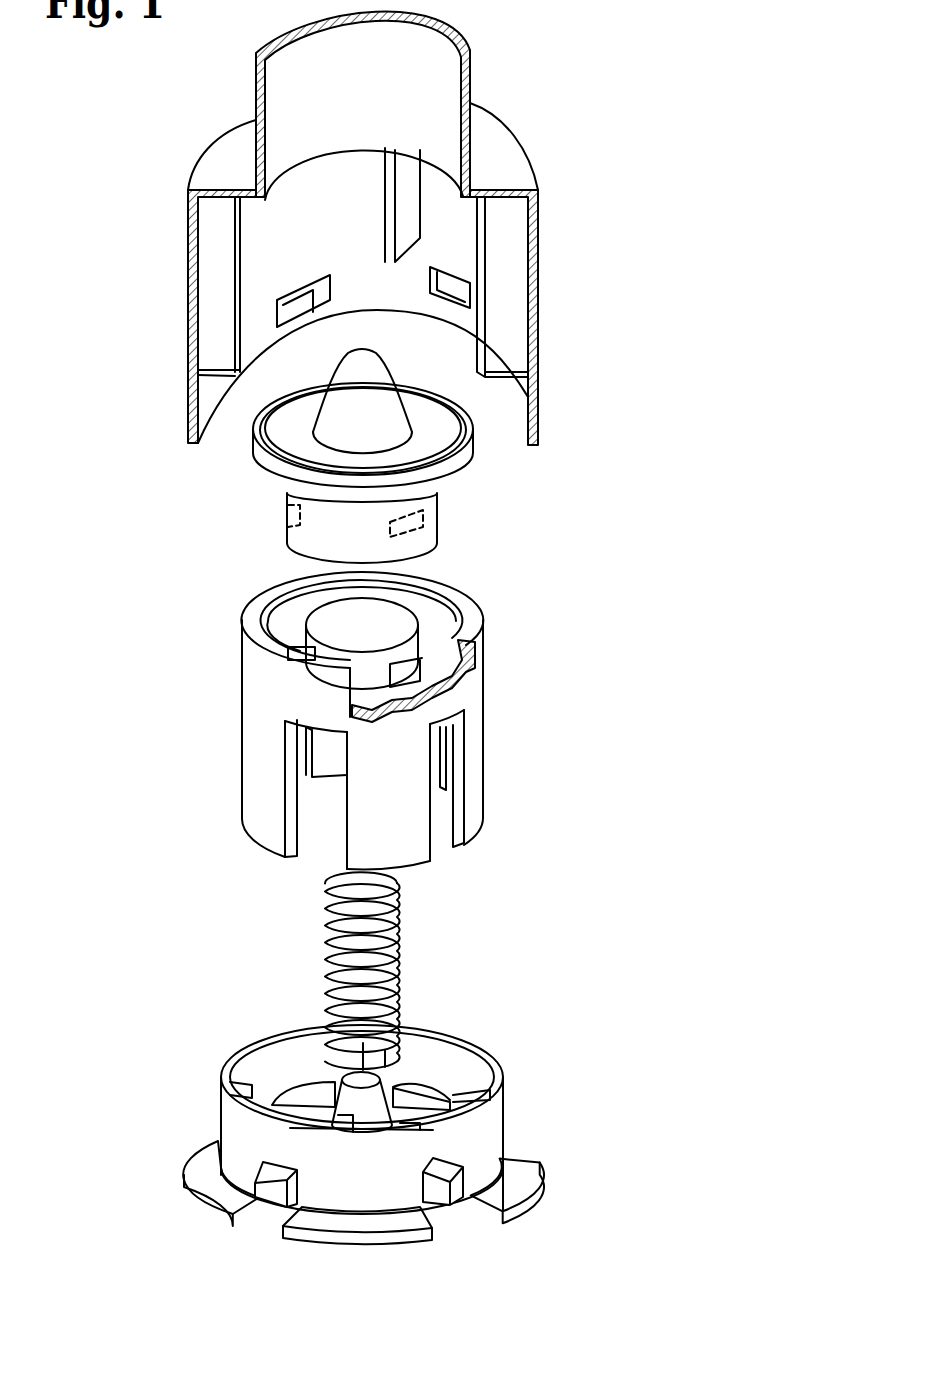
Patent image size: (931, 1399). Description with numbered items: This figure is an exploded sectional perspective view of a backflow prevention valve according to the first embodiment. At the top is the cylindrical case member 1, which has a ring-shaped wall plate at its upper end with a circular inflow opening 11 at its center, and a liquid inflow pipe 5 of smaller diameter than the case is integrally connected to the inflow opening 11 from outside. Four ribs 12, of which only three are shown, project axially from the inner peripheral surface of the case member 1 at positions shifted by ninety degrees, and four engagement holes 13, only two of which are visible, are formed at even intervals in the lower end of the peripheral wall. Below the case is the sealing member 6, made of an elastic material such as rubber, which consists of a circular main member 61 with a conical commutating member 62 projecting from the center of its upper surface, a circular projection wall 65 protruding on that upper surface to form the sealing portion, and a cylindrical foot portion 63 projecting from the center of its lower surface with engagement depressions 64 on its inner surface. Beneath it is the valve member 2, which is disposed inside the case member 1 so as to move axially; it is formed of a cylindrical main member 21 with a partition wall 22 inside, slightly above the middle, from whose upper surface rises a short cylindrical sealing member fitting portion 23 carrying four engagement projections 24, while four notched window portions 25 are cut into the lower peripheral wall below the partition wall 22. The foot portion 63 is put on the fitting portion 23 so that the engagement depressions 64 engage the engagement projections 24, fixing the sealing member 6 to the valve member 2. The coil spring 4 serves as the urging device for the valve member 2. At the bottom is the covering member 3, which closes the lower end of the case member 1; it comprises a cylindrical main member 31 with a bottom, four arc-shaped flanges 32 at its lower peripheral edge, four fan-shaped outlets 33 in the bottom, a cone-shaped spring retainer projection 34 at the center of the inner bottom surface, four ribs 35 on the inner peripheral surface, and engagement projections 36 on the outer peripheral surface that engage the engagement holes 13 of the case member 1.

The case member 1 is at (540, 242).
The liquid inflow pipe 5 is at (470, 84).
The inflow opening 11 is at (313, 157).
The ribs 12 is at (405, 195).
The engagement holes 13 is at (293, 303).
The valve member 2 is at (360, 720).
The cylindrical main member 21 is at (260, 730).
The partition wall 22 is at (440, 680).
The sealing member fitting portion 23 is at (327, 622).
The engagement projections 24 is at (465, 647).
The notched window portions 25 is at (293, 807).
The covering member 3 is at (370, 1118).
The cylindrical main member 31 is at (237, 1119).
The arc-shaped flanges 32 is at (513, 1190).
The fan-shaped outlets 33 is at (272, 1104).
The spring retainer projection 34 is at (312, 1097).
The ribs 35 is at (400, 1040).
The engagement projections 36 is at (497, 1173).
The coil spring 4 is at (397, 935).
The sealing member 6 is at (387, 465).
The circular main member 61 is at (253, 457).
The conical commutating member 62 is at (383, 417).
The cylindrical foot portion 63 is at (310, 546).
The engagement depressions 64 is at (287, 508).
The circular projection wall 65 is at (470, 420).